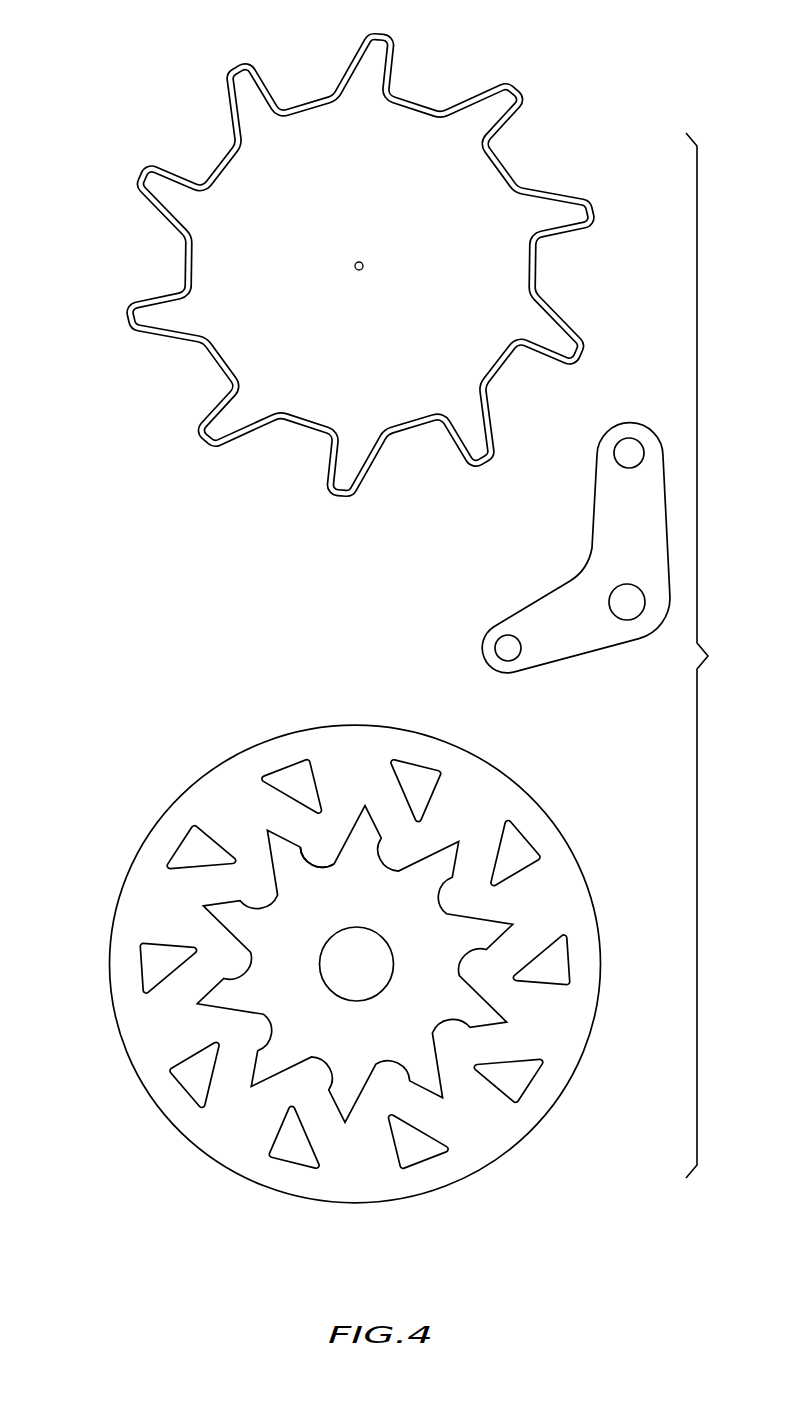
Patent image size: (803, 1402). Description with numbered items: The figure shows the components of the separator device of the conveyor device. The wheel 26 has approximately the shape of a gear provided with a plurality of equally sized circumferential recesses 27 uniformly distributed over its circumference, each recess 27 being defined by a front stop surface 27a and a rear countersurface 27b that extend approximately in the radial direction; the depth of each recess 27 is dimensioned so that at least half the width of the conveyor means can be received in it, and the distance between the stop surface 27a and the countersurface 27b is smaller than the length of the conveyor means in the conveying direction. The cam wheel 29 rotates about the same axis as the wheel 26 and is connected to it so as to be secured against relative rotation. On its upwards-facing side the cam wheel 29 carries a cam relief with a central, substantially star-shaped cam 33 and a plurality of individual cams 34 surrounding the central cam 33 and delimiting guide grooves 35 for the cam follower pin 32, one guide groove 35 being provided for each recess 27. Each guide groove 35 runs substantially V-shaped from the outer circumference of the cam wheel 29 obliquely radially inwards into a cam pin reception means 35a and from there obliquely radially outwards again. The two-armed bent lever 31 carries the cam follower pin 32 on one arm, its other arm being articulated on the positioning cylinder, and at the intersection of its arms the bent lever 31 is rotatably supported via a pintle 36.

The wheel 26 is at (468, 285).
The circumferential recess 27 is at (539, 151).
The front stop surface 27a is at (467, 82).
The rear countersurface 27b is at (400, 61).
The cam wheel 29 is at (180, 1102).
The bent lever 31 is at (550, 623).
The cam follower pin 32 is at (503, 648).
The central star-shaped cam 33 is at (418, 1035).
The individual cam 34 is at (512, 845).
The guide groove 35 is at (273, 820).
The cam pin reception means 35a is at (320, 866).
The pintle 36 is at (612, 601).